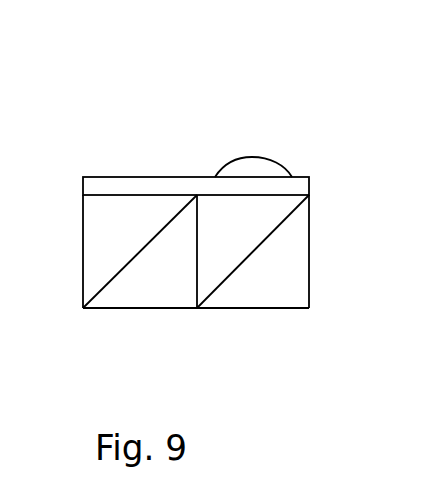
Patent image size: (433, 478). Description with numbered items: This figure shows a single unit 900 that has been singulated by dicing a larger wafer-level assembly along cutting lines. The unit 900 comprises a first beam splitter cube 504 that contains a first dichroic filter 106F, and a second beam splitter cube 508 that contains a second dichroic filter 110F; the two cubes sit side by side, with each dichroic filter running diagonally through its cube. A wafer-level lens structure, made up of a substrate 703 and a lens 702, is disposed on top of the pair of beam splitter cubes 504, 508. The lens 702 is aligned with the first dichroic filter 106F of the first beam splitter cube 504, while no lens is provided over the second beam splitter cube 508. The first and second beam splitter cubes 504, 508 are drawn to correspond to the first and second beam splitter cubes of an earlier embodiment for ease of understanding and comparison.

The unit 900 is at (98, 99).
The substrate 703 is at (83, 184).
The lens 702 is at (262, 159).
The second beam splitter cube 508 is at (83, 270).
The first beam splitter cube 504 is at (309, 226).
The second dichroic filter 110F is at (183, 267).
The first dichroic filter 106F is at (287, 277).